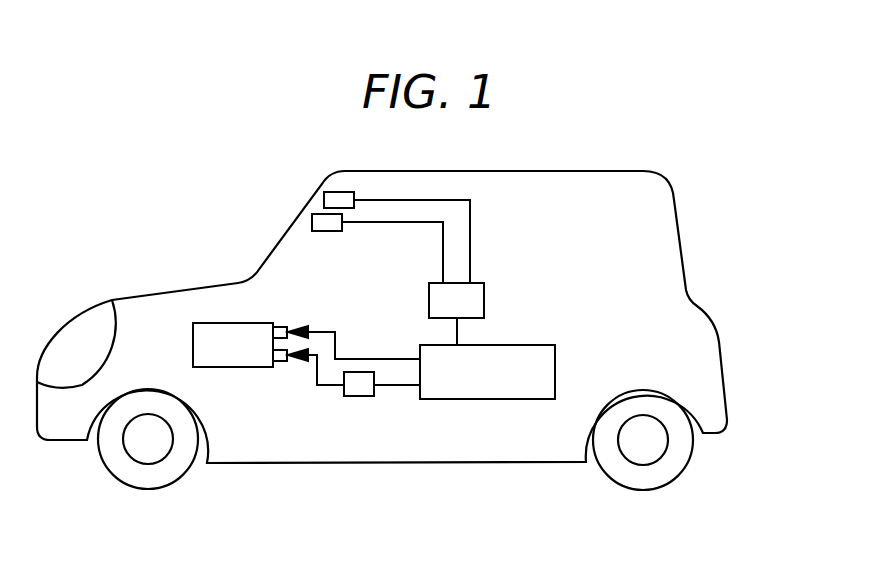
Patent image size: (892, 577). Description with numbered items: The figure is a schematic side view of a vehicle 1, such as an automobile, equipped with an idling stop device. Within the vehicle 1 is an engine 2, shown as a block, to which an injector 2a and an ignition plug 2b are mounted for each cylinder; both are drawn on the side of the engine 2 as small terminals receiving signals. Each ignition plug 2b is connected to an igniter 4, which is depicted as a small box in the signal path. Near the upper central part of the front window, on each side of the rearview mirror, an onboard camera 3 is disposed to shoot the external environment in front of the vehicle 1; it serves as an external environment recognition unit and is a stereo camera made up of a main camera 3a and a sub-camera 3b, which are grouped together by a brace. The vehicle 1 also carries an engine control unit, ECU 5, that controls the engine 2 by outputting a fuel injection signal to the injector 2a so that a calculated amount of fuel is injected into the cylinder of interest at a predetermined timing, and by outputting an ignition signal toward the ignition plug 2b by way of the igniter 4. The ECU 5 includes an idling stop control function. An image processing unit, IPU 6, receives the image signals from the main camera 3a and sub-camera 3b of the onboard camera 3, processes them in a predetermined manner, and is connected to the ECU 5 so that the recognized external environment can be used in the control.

The vehicle 1 is at (574, 170).
The engine 2 is at (233, 367).
The injector 2a is at (280, 326).
The ignition plug 2b is at (280, 362).
The onboard camera 3 is at (344, 213).
The main camera 3a is at (324, 200).
The sub-camera 3b is at (312, 222).
The igniter 4 is at (358, 396).
The engine control unit (ECU) 5 is at (487, 399).
The image processing unit (IPU) 6 is at (484, 300).